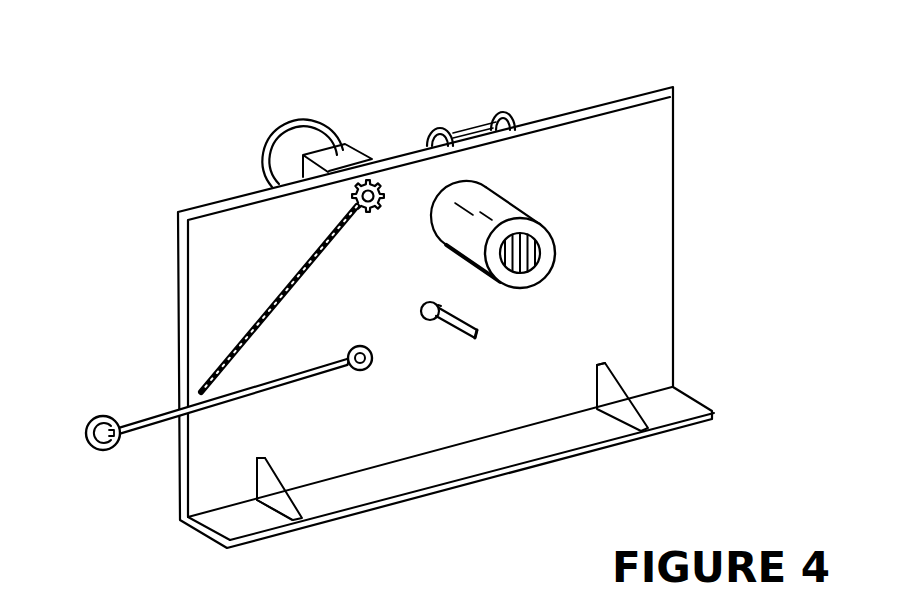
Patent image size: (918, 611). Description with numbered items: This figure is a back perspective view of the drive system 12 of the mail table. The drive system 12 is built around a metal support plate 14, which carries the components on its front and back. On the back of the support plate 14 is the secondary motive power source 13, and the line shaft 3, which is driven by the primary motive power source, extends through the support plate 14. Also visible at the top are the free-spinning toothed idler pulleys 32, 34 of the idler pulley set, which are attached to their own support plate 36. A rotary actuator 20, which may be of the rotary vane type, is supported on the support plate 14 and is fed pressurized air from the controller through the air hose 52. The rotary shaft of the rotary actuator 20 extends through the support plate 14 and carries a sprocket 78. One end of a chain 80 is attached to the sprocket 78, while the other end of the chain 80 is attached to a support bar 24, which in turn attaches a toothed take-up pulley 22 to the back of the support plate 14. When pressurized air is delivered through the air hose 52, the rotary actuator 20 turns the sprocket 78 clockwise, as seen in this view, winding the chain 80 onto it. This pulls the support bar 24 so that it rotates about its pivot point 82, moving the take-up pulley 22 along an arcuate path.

The drive system 12 is at (268, 113).
The support plate 14 is at (618, 140).
The air hose 52 is at (277, 151).
The rotary actuator 20 is at (354, 157).
The idler pulley 32 is at (437, 130).
The idler pulley 34 is at (512, 120).
The support plate 36 is at (463, 129).
The secondary motive power source 13 is at (493, 213).
The line shaft 3 is at (470, 333).
The sprocket 78 is at (376, 211).
The chain 80 is at (288, 283).
The pivot point 82 is at (374, 363).
The support bar 24 is at (150, 427).
The take-up pulley 22 is at (86, 428).